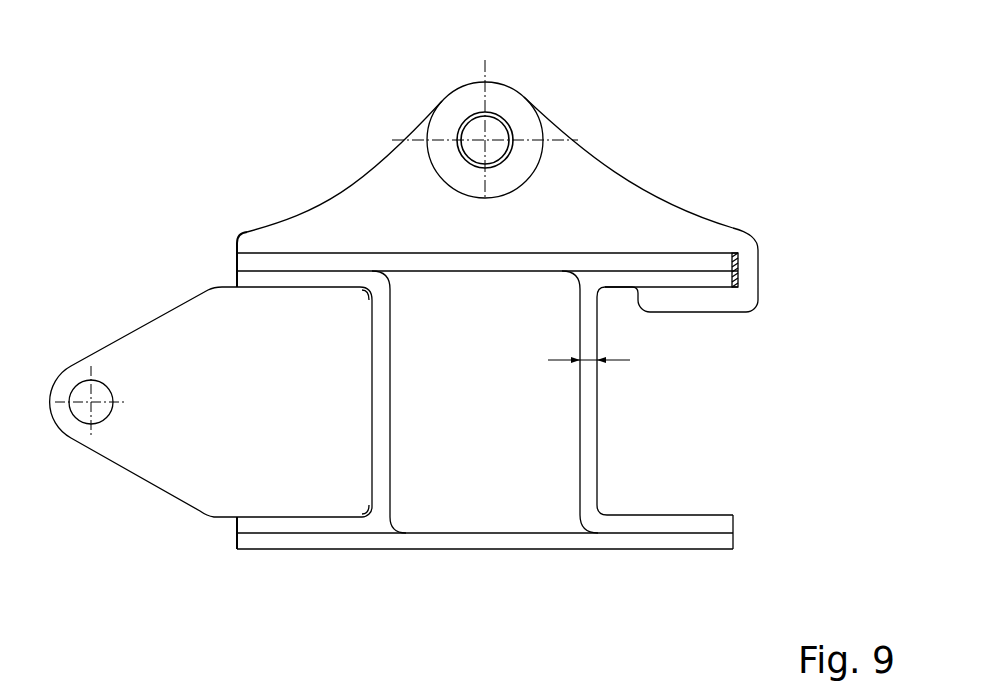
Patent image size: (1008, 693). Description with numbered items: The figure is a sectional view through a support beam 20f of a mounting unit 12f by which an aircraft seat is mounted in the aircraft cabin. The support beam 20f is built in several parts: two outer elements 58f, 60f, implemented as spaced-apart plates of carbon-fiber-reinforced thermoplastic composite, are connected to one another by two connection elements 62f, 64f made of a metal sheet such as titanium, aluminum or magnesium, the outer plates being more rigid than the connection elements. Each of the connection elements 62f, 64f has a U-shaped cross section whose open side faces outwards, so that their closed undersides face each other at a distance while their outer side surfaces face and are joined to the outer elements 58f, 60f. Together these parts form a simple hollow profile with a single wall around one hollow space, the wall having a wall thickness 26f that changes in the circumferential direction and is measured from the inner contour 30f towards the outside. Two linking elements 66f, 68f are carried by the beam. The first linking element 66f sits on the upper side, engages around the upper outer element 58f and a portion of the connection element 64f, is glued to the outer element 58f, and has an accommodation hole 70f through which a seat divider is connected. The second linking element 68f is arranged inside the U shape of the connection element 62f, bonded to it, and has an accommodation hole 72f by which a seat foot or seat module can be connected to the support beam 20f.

The mounting unit 12f is at (160, 225).
The support beam 20f is at (617, 270).
The wall thickness 26f is at (590, 362).
The inner contour 30f is at (391, 391).
The outer element 58f is at (463, 262).
The outer element 60f is at (535, 538).
The connection element 62f is at (378, 468).
The connection element 64f is at (590, 330).
The linking element 66f is at (600, 213).
The linking element 68f is at (177, 405).
The accommodation hole 70f is at (508, 103).
The accommodation hole 72f is at (73, 385).